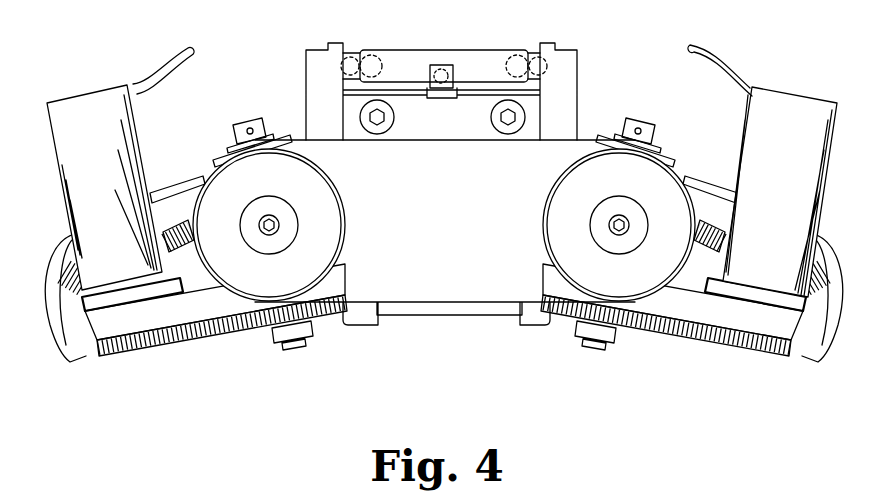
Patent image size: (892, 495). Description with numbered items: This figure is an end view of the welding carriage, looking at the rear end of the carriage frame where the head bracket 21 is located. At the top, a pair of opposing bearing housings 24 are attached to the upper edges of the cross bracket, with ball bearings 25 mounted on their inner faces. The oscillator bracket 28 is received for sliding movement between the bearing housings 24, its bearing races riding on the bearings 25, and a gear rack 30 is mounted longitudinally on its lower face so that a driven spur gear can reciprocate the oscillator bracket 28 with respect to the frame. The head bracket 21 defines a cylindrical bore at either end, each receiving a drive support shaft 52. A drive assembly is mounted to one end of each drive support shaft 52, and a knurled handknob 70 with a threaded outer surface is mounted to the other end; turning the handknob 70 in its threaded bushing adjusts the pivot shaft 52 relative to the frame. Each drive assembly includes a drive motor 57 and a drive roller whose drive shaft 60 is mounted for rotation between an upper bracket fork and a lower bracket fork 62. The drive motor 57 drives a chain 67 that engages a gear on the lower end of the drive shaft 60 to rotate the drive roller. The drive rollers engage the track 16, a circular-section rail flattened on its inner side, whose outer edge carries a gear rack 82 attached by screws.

The track 16 is at (70, 232).
The head bracket 21 is at (440, 242).
The bearing housings 24 is at (312, 76).
The ball bearings 25 is at (352, 56).
The oscillator bracket 28 is at (412, 60).
The gear rack 30 is at (452, 76).
The drive support shafts 52 is at (282, 224).
The drive motor 57 is at (88, 105).
The drive shaft 60 is at (290, 346).
The lower bracket fork 62 is at (107, 328).
The chain 67 is at (222, 336).
The knurled handknob 70 is at (225, 189).
The gear rack 82 is at (713, 197).